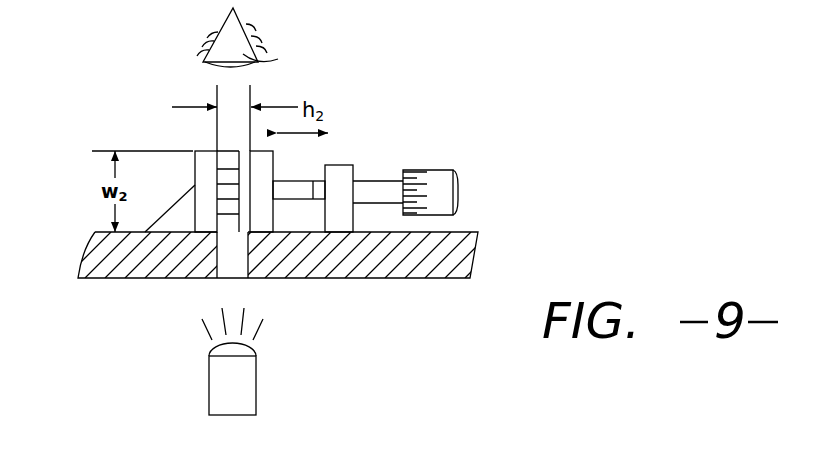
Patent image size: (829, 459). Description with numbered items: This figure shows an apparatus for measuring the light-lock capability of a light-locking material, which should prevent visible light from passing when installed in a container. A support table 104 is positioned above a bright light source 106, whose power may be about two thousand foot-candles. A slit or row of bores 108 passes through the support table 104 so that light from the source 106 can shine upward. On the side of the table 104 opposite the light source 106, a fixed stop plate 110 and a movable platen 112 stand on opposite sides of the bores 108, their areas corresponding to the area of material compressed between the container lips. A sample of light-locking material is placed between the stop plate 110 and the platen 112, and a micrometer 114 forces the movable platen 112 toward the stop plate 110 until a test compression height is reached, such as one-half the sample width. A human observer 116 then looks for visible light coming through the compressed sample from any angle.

The support table 104 is at (377, 278).
The light source 106 is at (257, 393).
The slit or row of bores 108 is at (224, 276).
The fixed stop plate 110 is at (203, 150).
The movable platen 112 is at (262, 190).
The micrometer 114 is at (387, 188).
The human observer 116 is at (235, 35).